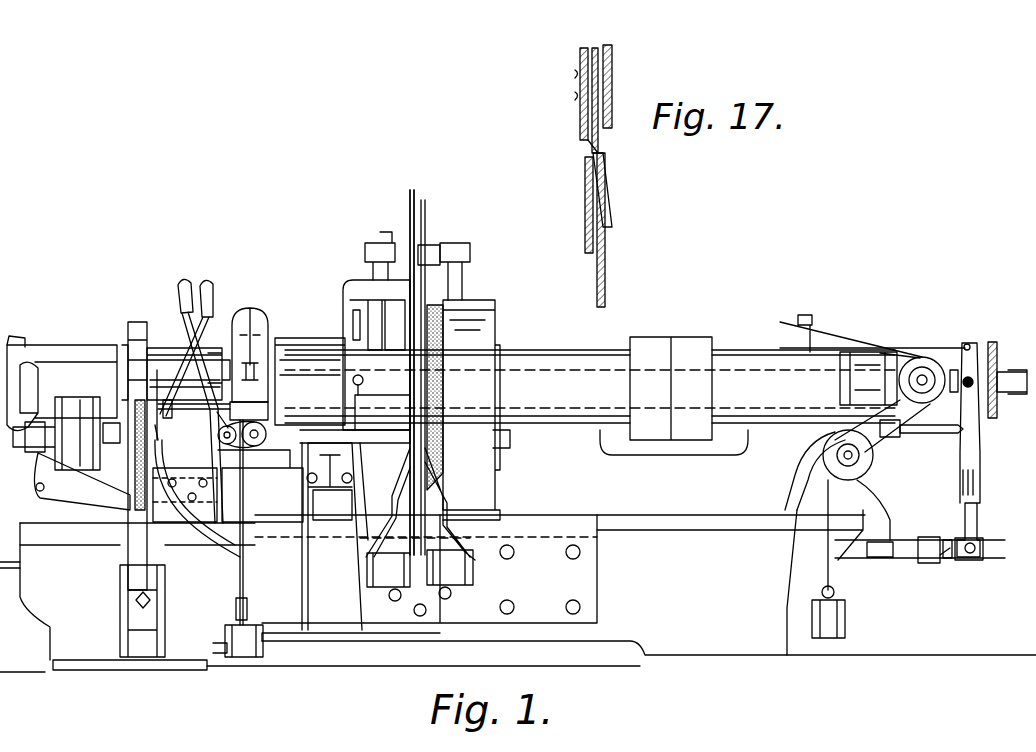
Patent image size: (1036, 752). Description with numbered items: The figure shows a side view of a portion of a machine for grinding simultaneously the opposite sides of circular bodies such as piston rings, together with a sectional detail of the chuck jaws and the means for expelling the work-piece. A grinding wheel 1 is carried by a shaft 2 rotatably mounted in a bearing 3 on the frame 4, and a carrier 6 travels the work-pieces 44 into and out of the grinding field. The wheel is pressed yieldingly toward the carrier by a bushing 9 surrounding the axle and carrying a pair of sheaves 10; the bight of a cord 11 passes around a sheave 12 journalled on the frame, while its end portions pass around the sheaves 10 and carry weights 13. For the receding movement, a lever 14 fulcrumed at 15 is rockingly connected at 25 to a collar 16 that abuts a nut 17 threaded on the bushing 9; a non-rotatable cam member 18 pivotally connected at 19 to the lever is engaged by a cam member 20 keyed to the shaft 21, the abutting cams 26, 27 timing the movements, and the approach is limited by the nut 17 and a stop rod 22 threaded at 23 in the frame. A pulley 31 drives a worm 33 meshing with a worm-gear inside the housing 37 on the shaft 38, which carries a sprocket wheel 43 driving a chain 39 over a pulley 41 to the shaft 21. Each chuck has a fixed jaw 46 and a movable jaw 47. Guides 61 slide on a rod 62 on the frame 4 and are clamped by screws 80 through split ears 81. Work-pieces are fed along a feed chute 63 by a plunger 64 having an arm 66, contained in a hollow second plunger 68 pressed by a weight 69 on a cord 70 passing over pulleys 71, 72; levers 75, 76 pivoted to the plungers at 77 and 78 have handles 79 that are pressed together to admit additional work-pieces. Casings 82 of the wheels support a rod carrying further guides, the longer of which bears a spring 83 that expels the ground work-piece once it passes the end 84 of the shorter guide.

In FIG. 1, the grinding wheel 1 is at (420, 300).
In FIG. 1, the shaft 2 is at (590, 356).
In FIG. 1, the bearing 3 is at (552, 356).
In FIG. 1, the frame 4 is at (442, 555).
In FIG. 1, the carrier 6 is at (420, 245).
In FIG. 1, the bushing 9 is at (905, 348).
In FIG. 1, the sheave 10 is at (922, 380).
In FIG. 1, the cord 11 is at (15, 341).
In FIG. 1, the sheave 12 is at (14, 345).
In FIG. 1, the weight 13 is at (848, 610).
In FIG. 1, the lever 14 is at (978, 450).
In FIG. 1, the fulcrum 15 is at (969, 342).
In FIG. 1, the collar 16 is at (953, 368).
In FIG. 1, the nut 17 is at (995, 340).
In FIG. 1, the cam member 18 is at (972, 562).
In FIG. 1, the pivot connection 19 is at (376, 338).
In FIG. 1, the cam member 20 is at (935, 563).
In FIG. 1, the shaft 21 is at (850, 558).
In FIG. 1, the stop rod 22 is at (940, 432).
In FIG. 1, the threaded connection 23 is at (895, 437).
In FIG. 1, the rocking connection 25 is at (964, 387).
In FIG. 1, the cam 26 is at (960, 562).
In FIG. 1, the cam 27 is at (948, 540).
In FIG. 1, the pulley 31 is at (71, 453).
In FIG. 1, the worm 33 is at (254, 448).
In FIG. 1, the housing 37 is at (282, 342).
In FIG. 1, the shaft 38 is at (305, 345).
In FIG. 1, the chain 39 is at (140, 375).
In FIG. 1, the pulley 41 is at (152, 565).
In FIG. 1, the sprocket wheel 43 is at (127, 342).
In FIG. 17, the work-piece 44 is at (610, 197).
In FIG. 17, the fixed jaw 46 is at (608, 268).
In FIG. 17, the movable jaw 47 is at (600, 150).
In FIG. 1, the guide 61 is at (405, 495).
In FIG. 1, the rod 62 is at (412, 600).
In FIG. 1, the feed chute 63 is at (355, 419).
In FIG. 1, the plunger 64 is at (194, 413).
In FIG. 1, the arm 66 is at (352, 389).
In FIG. 1, the second plunger 68 is at (249, 411).
In FIG. 1, the weight 69 is at (243, 657).
In FIG. 1, the cord 70 is at (246, 515).
In FIG. 1, the pulley 71 is at (218, 443).
In FIG. 1, the pulley 72 is at (234, 607).
In FIG. 1, the lever 75 is at (180, 310).
In FIG. 1, the lever 76 is at (230, 312).
In FIG. 1, the pivot connection 77 is at (169, 436).
In FIG. 1, the pivot connection 78 is at (206, 430).
In FIG. 1, the handle 79 is at (207, 275).
In FIG. 1, the screw 80 is at (388, 595).
In FIG. 1, the ear 81 is at (462, 603).
In FIG. 1, the casing 82 is at (482, 302).
In FIG. 17, the spring 83 is at (585, 140).
In FIG. 17, the end 84 is at (600, 128).